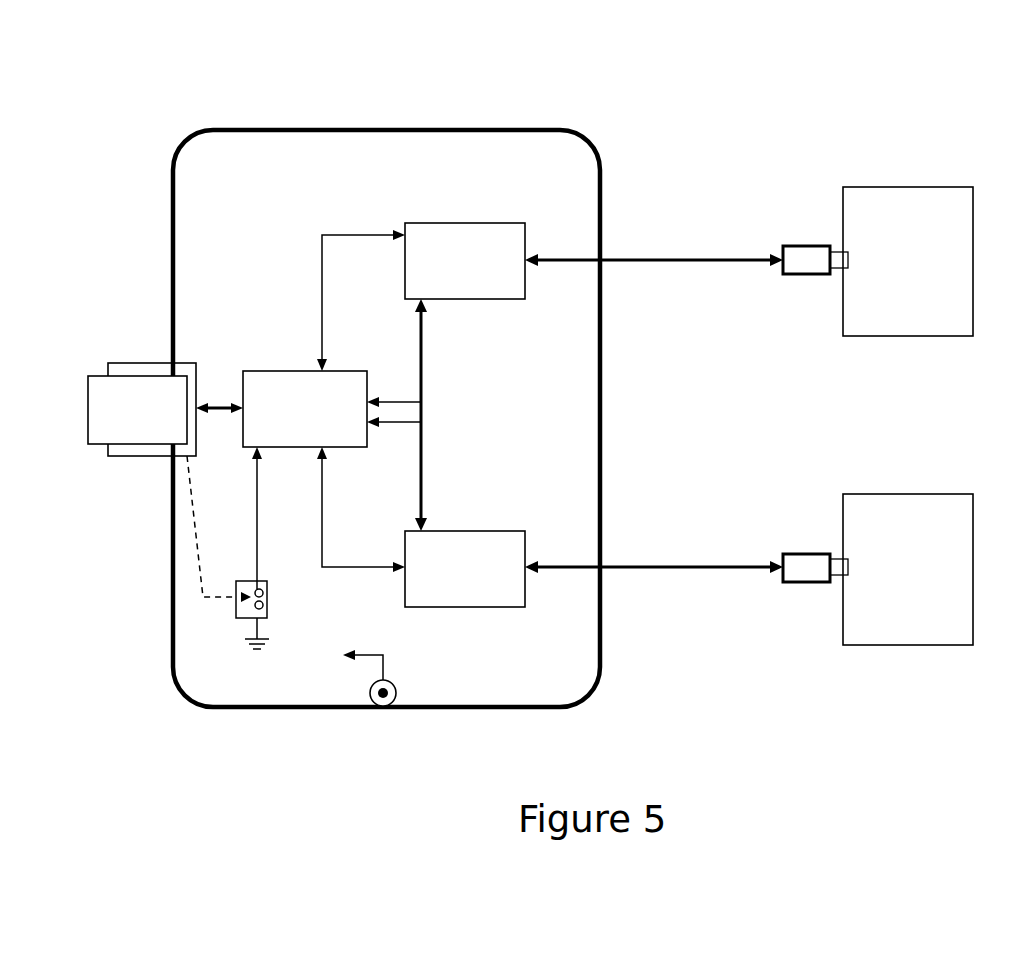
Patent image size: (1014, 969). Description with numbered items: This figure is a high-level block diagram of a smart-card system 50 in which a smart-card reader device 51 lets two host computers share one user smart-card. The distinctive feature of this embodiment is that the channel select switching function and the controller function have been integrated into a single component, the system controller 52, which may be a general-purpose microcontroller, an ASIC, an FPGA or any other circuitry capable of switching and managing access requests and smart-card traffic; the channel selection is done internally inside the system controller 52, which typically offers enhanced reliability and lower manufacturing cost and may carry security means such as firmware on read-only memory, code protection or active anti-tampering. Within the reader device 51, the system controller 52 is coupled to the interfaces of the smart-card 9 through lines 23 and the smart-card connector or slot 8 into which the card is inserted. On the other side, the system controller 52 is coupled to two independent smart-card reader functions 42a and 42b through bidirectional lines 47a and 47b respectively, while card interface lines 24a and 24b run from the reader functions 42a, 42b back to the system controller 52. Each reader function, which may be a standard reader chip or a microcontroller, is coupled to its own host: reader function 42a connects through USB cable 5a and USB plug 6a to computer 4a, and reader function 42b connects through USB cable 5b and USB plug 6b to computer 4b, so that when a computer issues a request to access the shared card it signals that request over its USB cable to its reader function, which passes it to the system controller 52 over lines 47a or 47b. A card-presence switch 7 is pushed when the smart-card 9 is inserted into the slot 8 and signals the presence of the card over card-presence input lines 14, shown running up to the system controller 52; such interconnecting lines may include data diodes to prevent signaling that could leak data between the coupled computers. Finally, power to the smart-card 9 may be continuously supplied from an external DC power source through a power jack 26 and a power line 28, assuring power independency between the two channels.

The smart-card system 50 is at (50, 58).
The smart-card reader device 51 is at (600, 412).
The system controller 52 is at (291, 370).
The smart-card reader function 42a is at (465, 222).
The smart-card reader function 42b is at (465, 607).
The bidirectional lines 47a is at (356, 234).
The bidirectional lines 47b is at (370, 566).
The lines 24a is at (421, 356).
The lines 24b is at (421, 428).
The lines 23 is at (226, 400).
The smart-card connector or slot 8 is at (150, 362).
The smart-card 9 is at (87, 410).
The card-presence inputs lines 14 is at (256, 502).
The card-presence switch 7 is at (268, 600).
The power line 28 is at (359, 654).
The power jack 26 is at (383, 708).
The USB cable 5a is at (705, 258).
The USB cable 5b is at (705, 565).
The USB plug 6a is at (810, 245).
The USB plug 6b is at (810, 552).
The computer 4a is at (898, 186).
The computer 4b is at (898, 493).